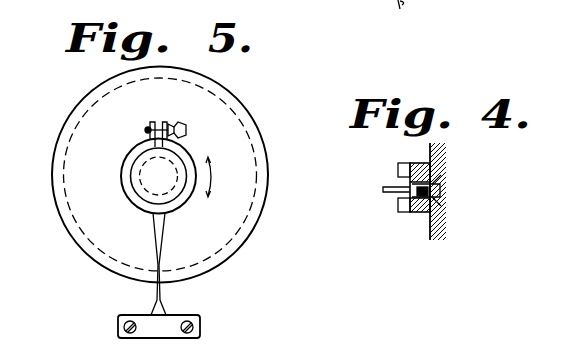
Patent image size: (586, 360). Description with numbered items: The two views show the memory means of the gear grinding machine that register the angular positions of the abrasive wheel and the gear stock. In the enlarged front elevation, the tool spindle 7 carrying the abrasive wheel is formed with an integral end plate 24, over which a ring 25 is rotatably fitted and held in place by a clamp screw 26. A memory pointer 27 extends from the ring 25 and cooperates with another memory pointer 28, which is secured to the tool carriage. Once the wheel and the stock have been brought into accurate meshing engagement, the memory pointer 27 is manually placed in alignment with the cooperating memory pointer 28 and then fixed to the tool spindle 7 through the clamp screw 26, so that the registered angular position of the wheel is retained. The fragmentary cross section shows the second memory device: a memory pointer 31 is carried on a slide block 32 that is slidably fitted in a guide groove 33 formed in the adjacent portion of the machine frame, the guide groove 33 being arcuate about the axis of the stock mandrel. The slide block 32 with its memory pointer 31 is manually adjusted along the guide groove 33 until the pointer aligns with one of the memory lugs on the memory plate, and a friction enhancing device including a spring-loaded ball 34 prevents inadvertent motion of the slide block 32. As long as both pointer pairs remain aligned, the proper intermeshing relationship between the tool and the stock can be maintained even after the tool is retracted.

In FIG. 5, the tool spindle 7 is at (145, 163).
In FIG. 5, the end plate 24 is at (133, 175).
In FIG. 5, the ring 25 is at (128, 193).
In FIG. 5, the clamp screw 26 is at (187, 130).
In FIG. 5, the memory pointer 27 is at (158, 243).
In FIG. 5, the memory pointer 28 is at (162, 298).
In FIG. 4, the memory pointer 31 is at (390, 193).
In FIG. 4, the slide block 32 is at (437, 181).
In FIG. 4, the guide groove 33 is at (435, 205).
In FIG. 4, the spring-loaded ball 34 is at (437, 194).